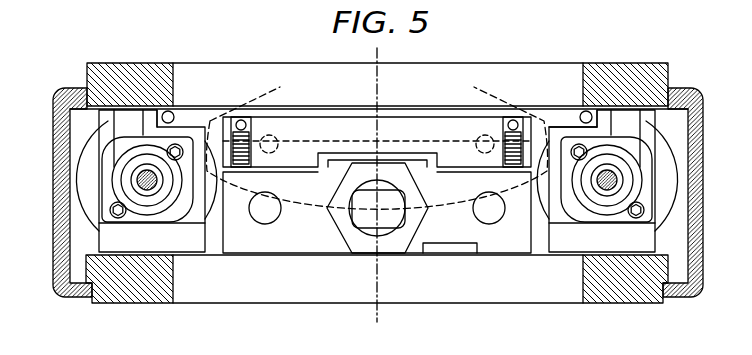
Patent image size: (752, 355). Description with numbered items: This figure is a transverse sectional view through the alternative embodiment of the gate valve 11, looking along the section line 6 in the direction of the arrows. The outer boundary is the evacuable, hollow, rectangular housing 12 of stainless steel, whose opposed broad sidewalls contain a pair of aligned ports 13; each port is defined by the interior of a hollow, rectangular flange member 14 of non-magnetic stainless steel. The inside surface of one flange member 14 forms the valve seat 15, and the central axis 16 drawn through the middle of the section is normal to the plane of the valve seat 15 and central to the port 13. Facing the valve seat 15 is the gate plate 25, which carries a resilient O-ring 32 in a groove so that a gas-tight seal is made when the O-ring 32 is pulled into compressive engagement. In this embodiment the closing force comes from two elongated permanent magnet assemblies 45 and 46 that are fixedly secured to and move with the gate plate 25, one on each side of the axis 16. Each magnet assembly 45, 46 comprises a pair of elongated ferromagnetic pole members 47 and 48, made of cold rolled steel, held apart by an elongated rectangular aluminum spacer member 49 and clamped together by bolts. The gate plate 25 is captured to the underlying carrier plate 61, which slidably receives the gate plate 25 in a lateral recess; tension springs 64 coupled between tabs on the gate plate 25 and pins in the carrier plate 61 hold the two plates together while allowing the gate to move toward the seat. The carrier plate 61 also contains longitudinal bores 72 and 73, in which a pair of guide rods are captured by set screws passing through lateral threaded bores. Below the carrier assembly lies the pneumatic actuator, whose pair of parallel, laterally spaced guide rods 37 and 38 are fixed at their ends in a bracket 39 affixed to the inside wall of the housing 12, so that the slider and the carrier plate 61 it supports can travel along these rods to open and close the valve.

The section line 6- 6 is at (376, 139).
The gate valve 11 is at (378, 165).
The housing 12 is at (53, 202).
The ports 13 is at (582, 80).
The flange members 14 is at (618, 67).
The valve seat 15 is at (637, 113).
The central axis 16 is at (377, 290).
The gate plate 25 is at (548, 127).
The O-ring 32 is at (178, 108).
The guide rod 37 is at (478, 208).
The guide rod 38 is at (276, 213).
The bracket 39 is at (234, 249).
The permanent magnet assembly 45 is at (624, 139).
The permanent magnet assembly 46 is at (117, 135).
The pole member 47 is at (103, 118).
The pole member 48 is at (150, 113).
The spacer member 49 is at (128, 115).
The carrier plate 61 is at (446, 159).
The tension springs 64 is at (252, 140).
The longitudinal bore 72 is at (296, 134).
The longitudinal bore 73 is at (476, 133).